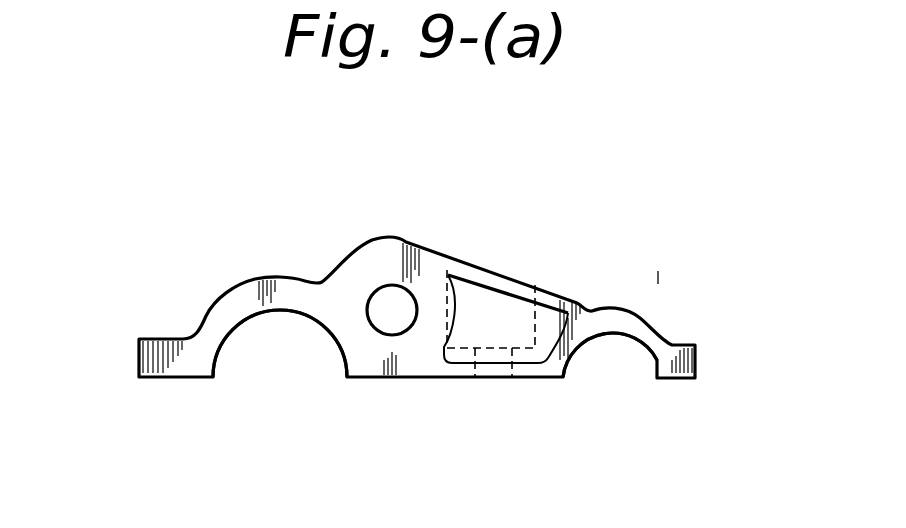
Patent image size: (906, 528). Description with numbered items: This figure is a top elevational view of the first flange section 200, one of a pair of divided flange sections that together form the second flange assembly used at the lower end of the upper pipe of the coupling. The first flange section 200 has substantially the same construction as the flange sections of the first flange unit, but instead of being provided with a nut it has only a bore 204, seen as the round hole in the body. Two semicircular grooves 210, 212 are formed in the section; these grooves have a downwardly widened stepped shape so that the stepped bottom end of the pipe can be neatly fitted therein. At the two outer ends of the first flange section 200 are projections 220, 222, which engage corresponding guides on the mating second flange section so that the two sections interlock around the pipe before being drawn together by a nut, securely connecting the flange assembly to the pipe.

The first flange section 200 is at (476, 217).
The bore 204 is at (394, 314).
The semicircular groove 210 is at (265, 313).
The semicircular groove 212 is at (651, 357).
The projection 220 is at (139, 359).
The projection 222 is at (697, 360).